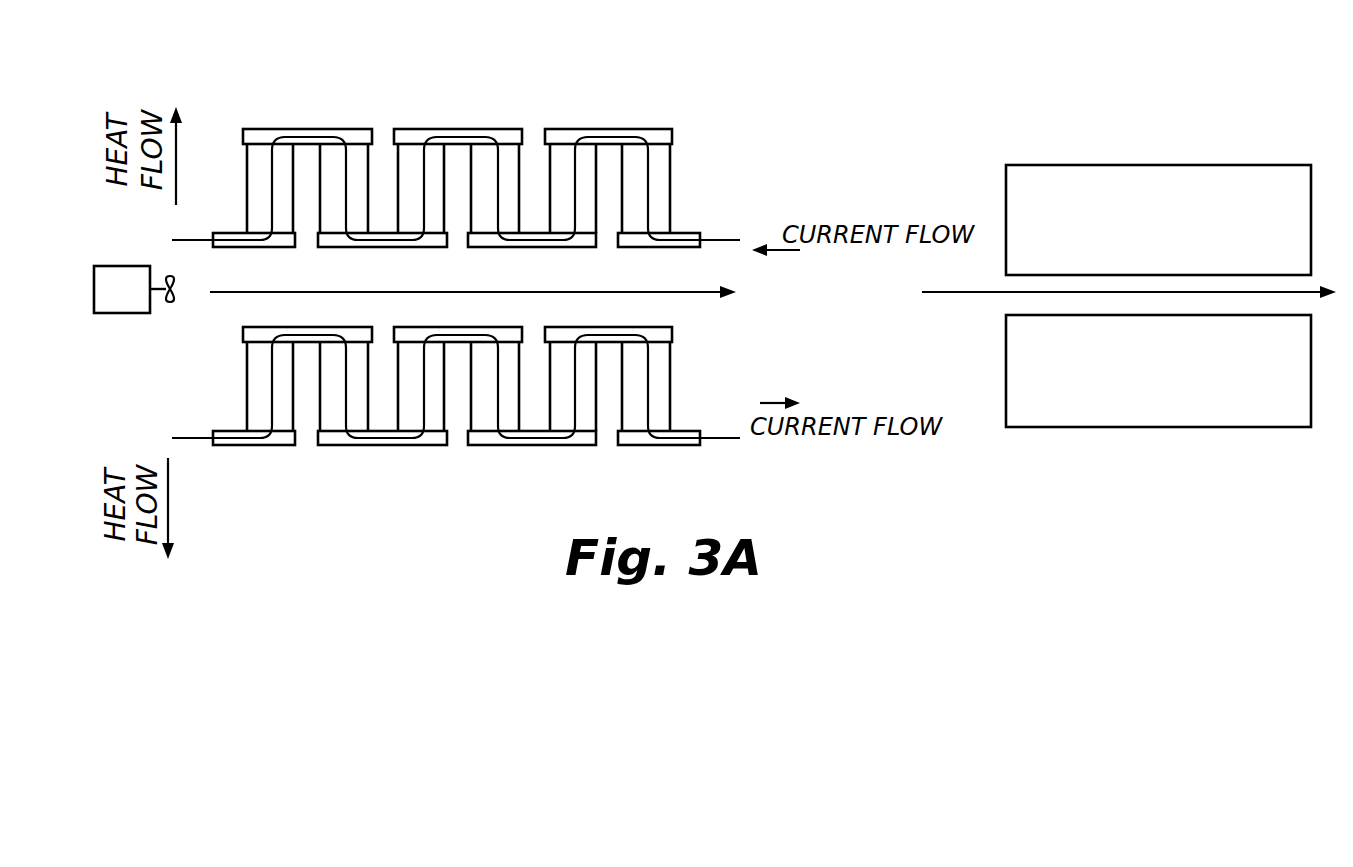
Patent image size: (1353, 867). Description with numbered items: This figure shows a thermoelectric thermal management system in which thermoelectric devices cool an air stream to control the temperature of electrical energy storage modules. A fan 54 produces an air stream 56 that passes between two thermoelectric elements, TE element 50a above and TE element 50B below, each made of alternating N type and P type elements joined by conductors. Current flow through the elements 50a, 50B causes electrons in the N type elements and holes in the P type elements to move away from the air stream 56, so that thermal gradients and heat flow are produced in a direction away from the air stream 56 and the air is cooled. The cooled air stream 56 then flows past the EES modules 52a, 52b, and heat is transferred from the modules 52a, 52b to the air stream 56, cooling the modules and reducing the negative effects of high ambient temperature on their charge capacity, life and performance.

The TE element 50a is at (696, 153).
The TE element 50B is at (704, 380).
The EES module 52a is at (1118, 165).
The EES module 52b is at (1118, 427).
The fan 54 is at (141, 340).
The air stream 56 is at (653, 292).